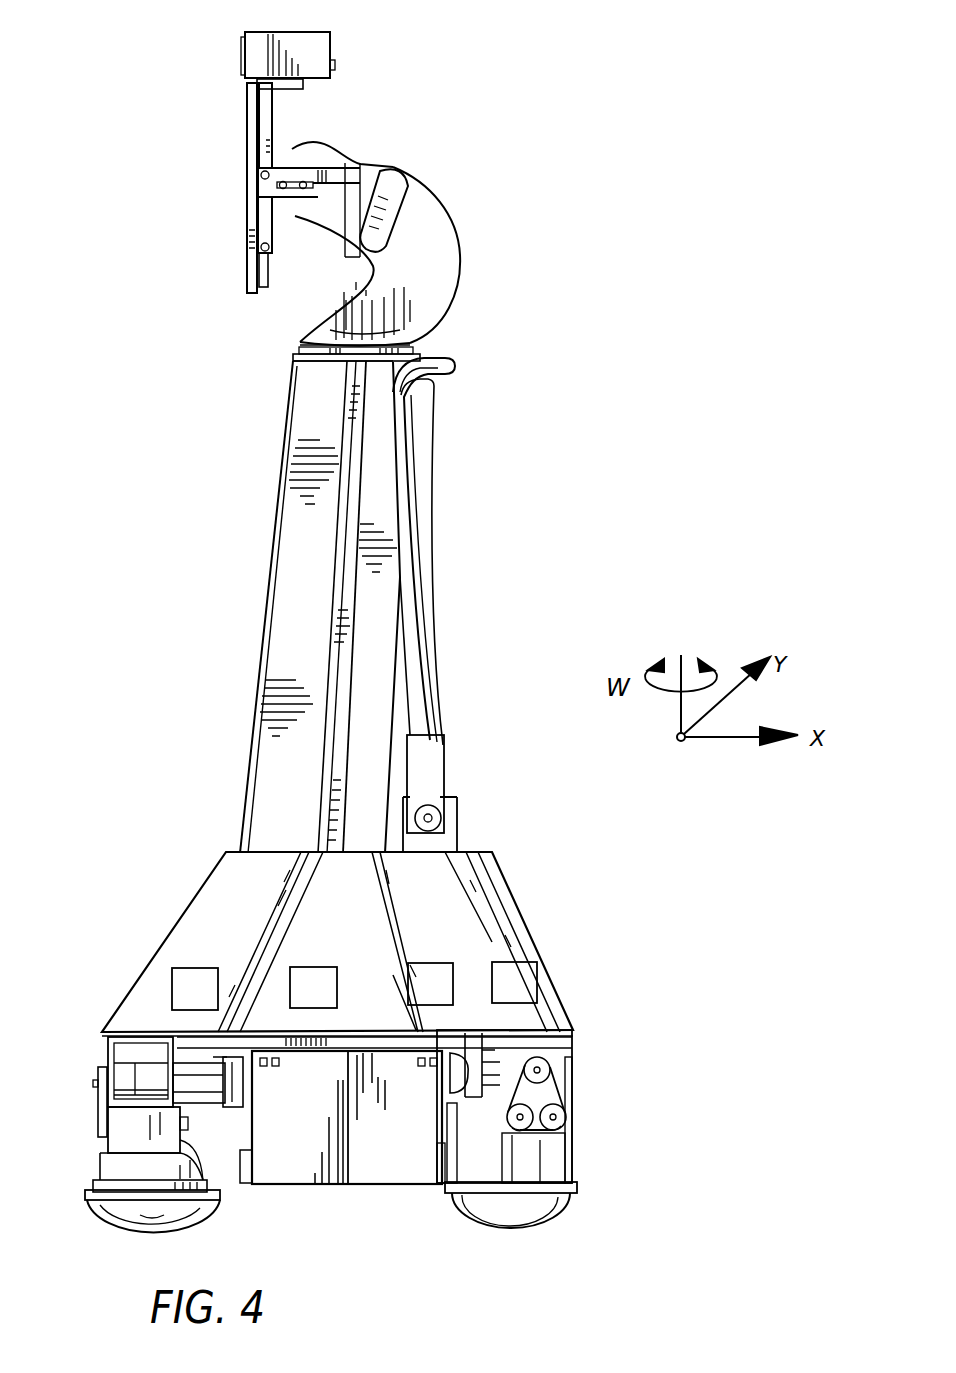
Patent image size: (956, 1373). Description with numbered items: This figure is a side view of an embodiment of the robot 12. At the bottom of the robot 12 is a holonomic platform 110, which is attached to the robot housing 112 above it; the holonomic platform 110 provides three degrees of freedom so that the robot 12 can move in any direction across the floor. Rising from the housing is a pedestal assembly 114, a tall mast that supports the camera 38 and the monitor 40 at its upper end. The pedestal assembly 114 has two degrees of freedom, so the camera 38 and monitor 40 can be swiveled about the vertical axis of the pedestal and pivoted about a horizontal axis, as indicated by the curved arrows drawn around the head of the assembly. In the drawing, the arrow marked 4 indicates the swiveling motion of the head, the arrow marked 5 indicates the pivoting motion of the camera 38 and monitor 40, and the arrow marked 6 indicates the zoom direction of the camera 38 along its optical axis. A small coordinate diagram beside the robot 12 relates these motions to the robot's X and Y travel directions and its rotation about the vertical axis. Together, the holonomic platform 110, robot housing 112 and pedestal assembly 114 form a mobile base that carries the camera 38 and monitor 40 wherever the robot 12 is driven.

The robot 12 is at (540, 881).
The camera 38 is at (272, 62).
The monitor 40 is at (262, 176).
The holonomic platform 110 is at (401, 1185).
The robot housing 112 is at (190, 909).
The pedestal assembly 114 is at (250, 495).
The pan rotation direction arrow 4 is at (272, 325).
The tilt rotation direction arrow 5 is at (281, 228).
The zoom direction arrow 6 is at (236, 13).